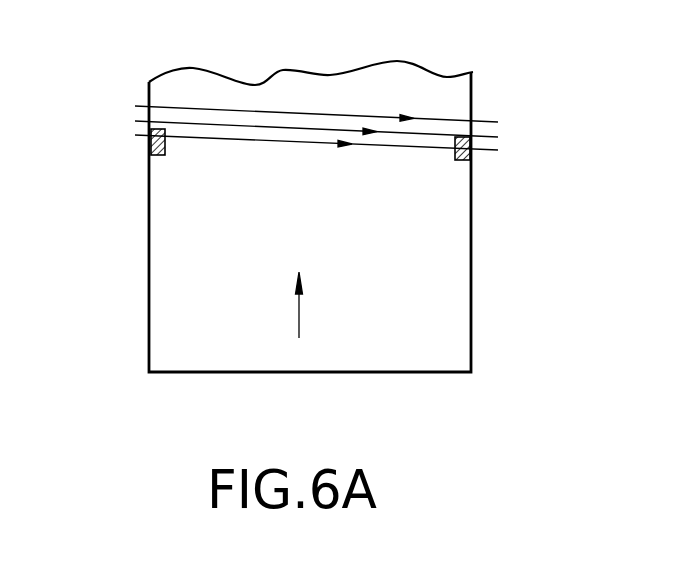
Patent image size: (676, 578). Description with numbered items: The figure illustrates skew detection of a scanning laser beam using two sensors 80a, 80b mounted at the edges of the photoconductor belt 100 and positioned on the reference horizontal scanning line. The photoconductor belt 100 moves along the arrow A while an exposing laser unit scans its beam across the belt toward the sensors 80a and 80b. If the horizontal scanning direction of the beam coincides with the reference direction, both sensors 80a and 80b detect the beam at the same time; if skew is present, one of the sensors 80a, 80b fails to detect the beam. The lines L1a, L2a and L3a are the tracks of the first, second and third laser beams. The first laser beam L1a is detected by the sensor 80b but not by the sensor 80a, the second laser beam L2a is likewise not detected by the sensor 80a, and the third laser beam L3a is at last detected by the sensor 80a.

The photoconductor belt 100 is at (453, 325).
The track of the first laser beam L1a is at (290, 112).
The track of the second laser beam L2a is at (232, 126).
The track of the third laser beam L3a is at (190, 136).
The sensor 80a is at (152, 139).
The sensor 80b is at (470, 160).
The arrow A is at (299, 317).